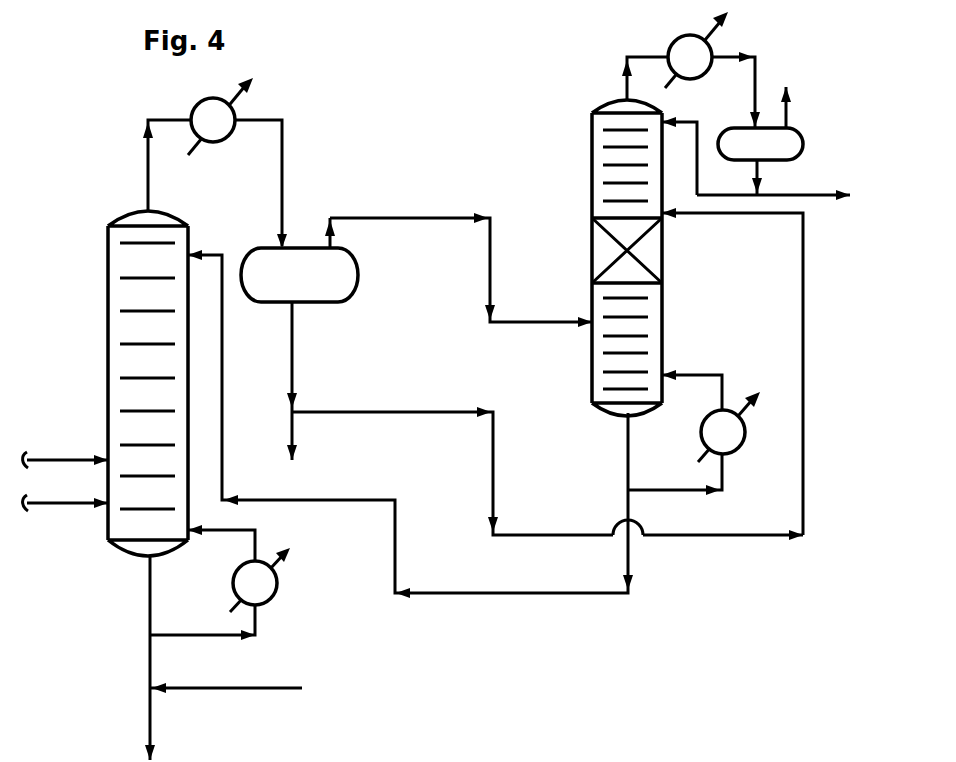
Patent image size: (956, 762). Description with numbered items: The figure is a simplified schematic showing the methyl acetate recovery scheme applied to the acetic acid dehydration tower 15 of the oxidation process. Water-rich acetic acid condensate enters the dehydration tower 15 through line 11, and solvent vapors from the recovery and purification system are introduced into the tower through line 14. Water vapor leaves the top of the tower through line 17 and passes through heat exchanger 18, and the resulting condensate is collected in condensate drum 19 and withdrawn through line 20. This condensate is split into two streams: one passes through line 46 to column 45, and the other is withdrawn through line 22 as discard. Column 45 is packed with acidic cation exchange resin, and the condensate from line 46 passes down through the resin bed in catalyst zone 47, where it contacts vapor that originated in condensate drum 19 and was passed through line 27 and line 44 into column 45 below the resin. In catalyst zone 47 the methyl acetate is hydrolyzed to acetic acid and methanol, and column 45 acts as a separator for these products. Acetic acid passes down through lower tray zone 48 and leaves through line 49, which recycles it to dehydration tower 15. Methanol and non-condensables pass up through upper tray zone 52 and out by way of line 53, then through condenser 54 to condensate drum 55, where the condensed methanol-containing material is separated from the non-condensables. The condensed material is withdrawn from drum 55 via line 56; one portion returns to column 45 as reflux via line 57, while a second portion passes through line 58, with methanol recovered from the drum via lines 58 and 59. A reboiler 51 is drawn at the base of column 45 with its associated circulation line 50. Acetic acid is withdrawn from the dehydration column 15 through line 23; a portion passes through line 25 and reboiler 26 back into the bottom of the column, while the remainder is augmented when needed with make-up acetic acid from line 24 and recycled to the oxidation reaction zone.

The line 11 is at (60, 460).
The line 14 is at (68, 503).
The acetic acid dehydration tower 15 is at (108, 365).
The line 17 is at (146, 186).
The heat exchanger 18 is at (196, 102).
The condensate drum 19 is at (358, 282).
The line 20 is at (295, 350).
The line 22 is at (295, 428).
The line 23 is at (148, 662).
The line 24 is at (215, 690).
The line 25 is at (212, 636).
The reboiler 26 is at (272, 598).
The line 27 is at (333, 237).
The line 44 is at (418, 218).
The column 45 is at (592, 190).
The line 46 is at (428, 412).
The catalyst zone 47 is at (655, 248).
The lower tray zone 48 is at (650, 335).
The line 49 is at (322, 500).
The reboiler circulation line 50 is at (672, 492).
The reboiler of second column 51 is at (738, 455).
The upper tray zone 52 is at (605, 160).
The line 53 is at (625, 58).
The condenser 54 is at (675, 44).
The condensate drum 55 is at (803, 146).
The line 56 is at (760, 178).
The line 57 is at (697, 122).
The line 58 is at (803, 220).
The line 59 is at (786, 118).